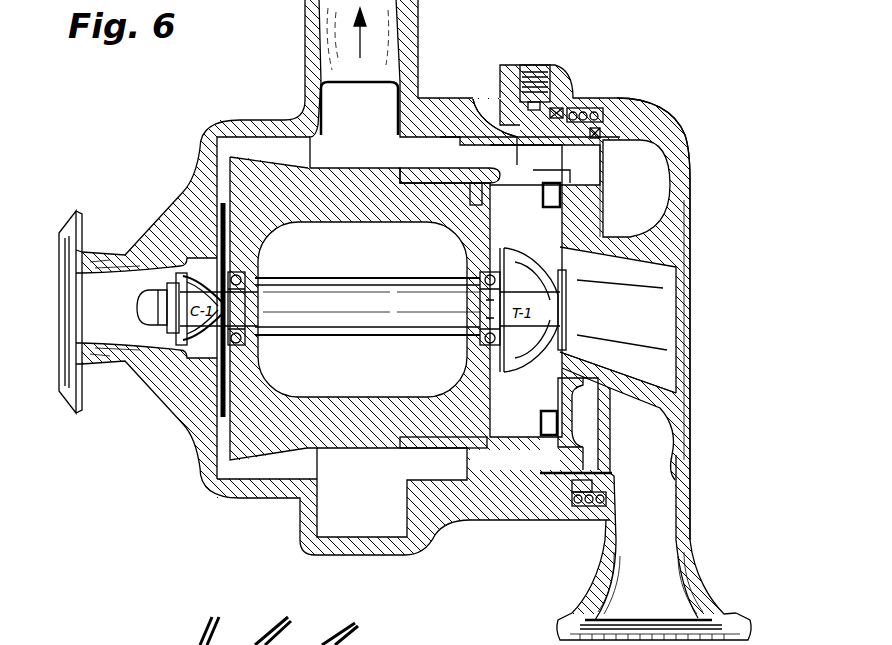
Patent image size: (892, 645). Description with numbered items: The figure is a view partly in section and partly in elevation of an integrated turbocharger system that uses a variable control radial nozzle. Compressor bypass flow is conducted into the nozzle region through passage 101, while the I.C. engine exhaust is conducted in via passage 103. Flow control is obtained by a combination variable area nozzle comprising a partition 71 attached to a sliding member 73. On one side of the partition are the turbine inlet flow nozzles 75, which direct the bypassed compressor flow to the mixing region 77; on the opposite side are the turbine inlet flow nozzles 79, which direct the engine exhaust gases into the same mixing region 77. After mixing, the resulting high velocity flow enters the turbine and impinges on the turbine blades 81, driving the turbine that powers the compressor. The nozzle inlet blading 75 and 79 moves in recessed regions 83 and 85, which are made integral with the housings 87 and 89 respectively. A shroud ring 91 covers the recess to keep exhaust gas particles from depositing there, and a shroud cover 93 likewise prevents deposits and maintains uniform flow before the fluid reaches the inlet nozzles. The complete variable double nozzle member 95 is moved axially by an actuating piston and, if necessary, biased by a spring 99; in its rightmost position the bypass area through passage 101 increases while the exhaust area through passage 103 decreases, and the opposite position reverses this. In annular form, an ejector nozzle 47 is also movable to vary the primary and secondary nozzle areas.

The ejector nozzle 47 is at (592, 142).
The partition 71 is at (524, 158).
The sliding member 73 is at (478, 108).
The turbine inlet flow nozzles 75 is at (470, 345).
The mixing region 77 is at (562, 195).
The turbine inlet flow nozzles 79 is at (540, 420).
The turbine blades 81 is at (583, 250).
The recessed region 83 is at (464, 264).
The recessed region 85 is at (575, 220).
The housing 87 is at (462, 222).
The housing 89 is at (580, 353).
The shroud ring 91 is at (583, 190).
The shroud cover 93 is at (406, 222).
The variable double nozzle member 95 is at (540, 452).
The spring 99 is at (590, 108).
The passage 101 is at (406, 215).
The passage 103 is at (648, 510).